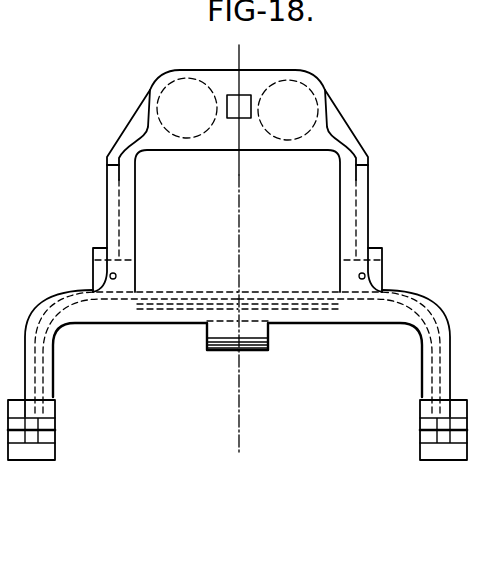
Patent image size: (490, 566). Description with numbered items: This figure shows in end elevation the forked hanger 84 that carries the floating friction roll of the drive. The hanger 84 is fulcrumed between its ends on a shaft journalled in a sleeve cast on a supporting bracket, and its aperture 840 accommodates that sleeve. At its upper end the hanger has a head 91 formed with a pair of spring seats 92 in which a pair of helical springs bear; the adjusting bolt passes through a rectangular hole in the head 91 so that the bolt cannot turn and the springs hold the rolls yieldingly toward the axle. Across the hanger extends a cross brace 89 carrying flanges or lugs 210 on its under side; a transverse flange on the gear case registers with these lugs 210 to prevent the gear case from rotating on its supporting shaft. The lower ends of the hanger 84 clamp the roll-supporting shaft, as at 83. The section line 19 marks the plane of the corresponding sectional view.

The forked hanger 84 is at (362, 208).
The aperture 840 is at (160, 204).
The head 91 is at (327, 93).
The spring seats 92 is at (158, 106).
The cross brace 89 is at (172, 320).
The flanges or lugs 210 is at (253, 334).
The clamp 83 is at (43, 443).
The section line 19- 19 is at (239, 45).